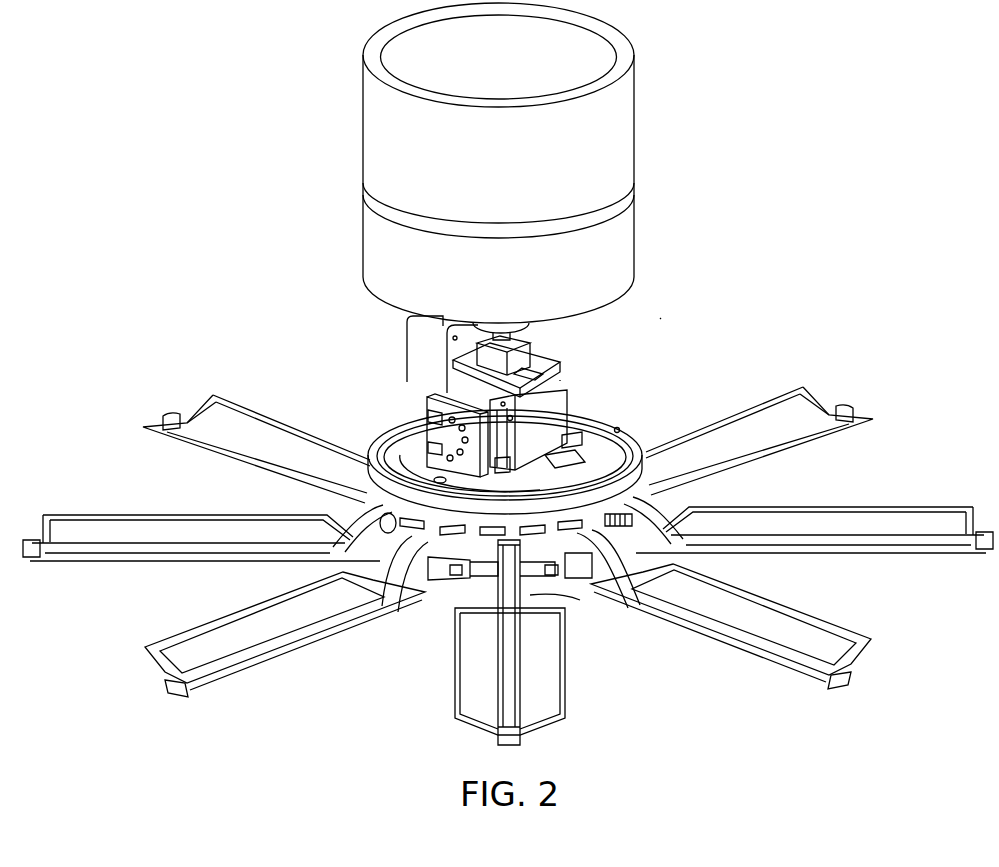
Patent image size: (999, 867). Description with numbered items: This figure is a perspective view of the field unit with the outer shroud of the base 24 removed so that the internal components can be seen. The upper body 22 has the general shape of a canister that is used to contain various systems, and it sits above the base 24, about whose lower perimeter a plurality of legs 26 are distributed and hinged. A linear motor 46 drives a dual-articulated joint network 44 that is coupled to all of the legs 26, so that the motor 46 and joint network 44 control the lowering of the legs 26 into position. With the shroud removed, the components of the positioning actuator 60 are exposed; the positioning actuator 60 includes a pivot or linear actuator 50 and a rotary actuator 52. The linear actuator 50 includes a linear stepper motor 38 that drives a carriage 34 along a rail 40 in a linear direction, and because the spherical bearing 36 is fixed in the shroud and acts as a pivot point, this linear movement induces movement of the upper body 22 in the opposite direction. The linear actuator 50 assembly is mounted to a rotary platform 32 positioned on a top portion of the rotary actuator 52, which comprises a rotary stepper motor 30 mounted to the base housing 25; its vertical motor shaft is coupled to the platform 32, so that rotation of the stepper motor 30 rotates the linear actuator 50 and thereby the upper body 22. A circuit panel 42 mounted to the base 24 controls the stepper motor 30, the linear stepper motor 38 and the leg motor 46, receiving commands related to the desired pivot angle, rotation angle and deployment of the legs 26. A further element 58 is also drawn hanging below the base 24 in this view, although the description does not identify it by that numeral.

The upper body 22 is at (552, 191).
The base 24 is at (241, 410).
The base housing 25 is at (405, 445).
The legs 26 is at (825, 440).
The rotary stepper motor 30 is at (578, 405).
The rotary platform 32 is at (440, 382).
The carriage 34 is at (540, 356).
The spherical bearing 36 is at (500, 326).
The linear stepper motor 38 is at (407, 323).
The rail 40 is at (452, 366).
The circuit panel 42 is at (428, 418).
The dual-articulated joint network 44 is at (445, 592).
The linear motor 46 is at (670, 560).
The linear actuator 50 is at (576, 366).
The rotary actuator 52 is at (625, 414).
The fin 58 is at (612, 588).
The positioning actuator 60 is at (664, 316).